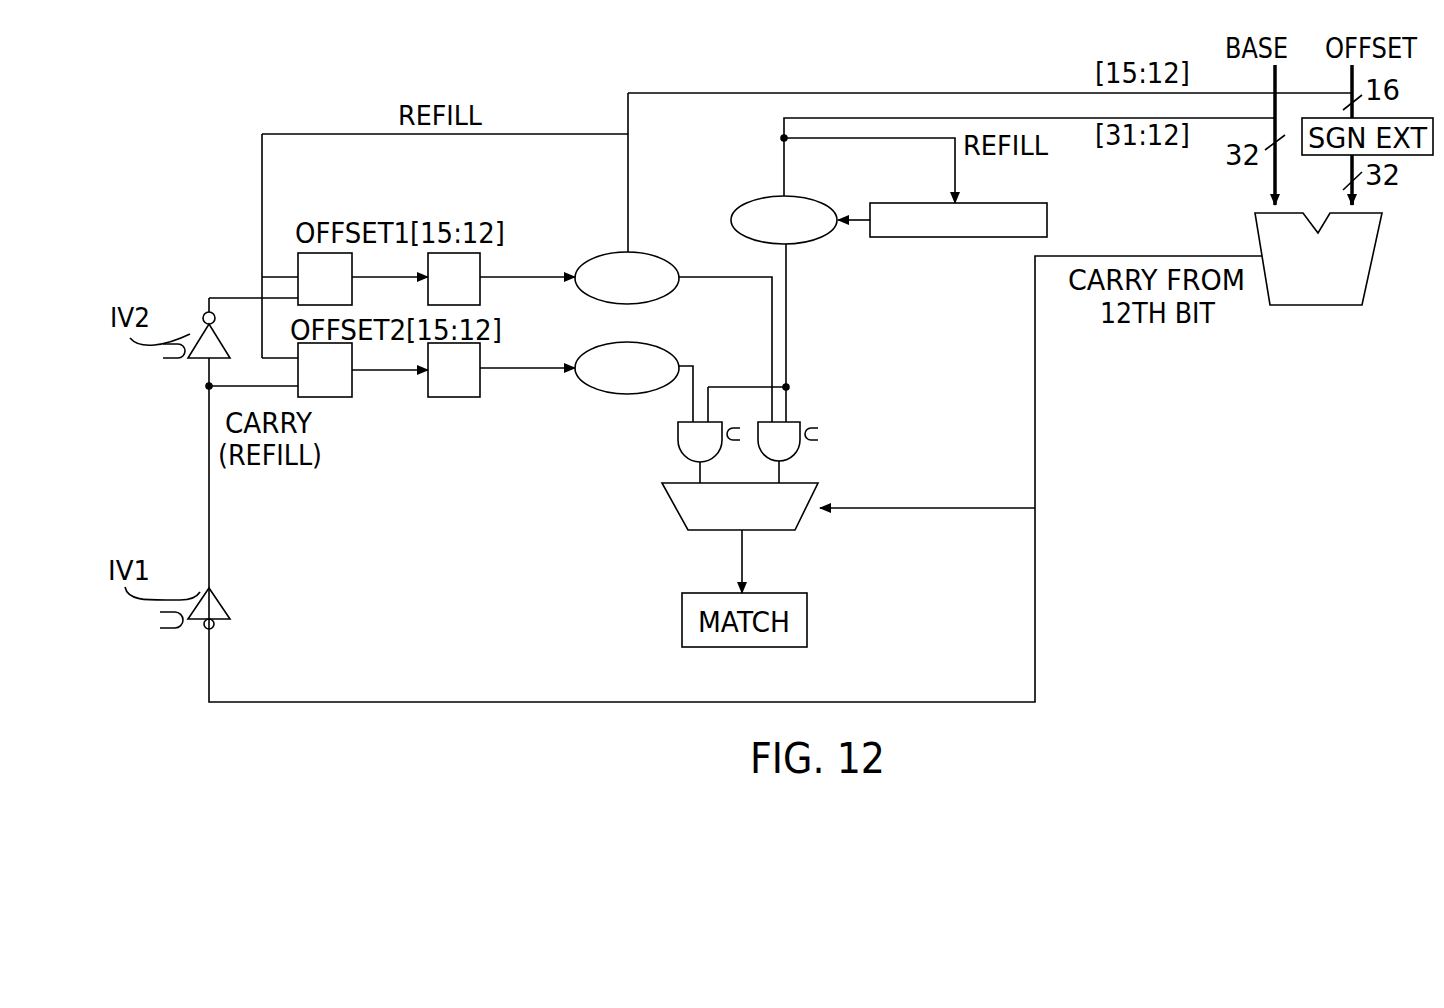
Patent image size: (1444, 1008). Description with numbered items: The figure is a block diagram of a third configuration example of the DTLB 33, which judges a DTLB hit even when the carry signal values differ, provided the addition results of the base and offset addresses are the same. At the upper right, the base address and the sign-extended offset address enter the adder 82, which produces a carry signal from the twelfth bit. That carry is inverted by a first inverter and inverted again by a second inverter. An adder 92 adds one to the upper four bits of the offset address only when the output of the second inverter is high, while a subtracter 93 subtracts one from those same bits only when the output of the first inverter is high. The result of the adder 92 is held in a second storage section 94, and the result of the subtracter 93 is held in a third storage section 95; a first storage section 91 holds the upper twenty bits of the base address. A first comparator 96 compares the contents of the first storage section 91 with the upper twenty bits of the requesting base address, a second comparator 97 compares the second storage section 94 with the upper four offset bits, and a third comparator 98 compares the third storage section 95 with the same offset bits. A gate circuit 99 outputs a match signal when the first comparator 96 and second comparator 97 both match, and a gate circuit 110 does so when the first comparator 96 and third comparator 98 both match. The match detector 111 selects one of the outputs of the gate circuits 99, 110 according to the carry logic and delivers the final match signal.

The DTLB 33 is at (1234, 530).
The adder 82 is at (1365, 288).
The first storage section 91 is at (947, 237).
The adder 92 is at (298, 262).
The subtracter 93 is at (333, 397).
The second storage section 94 is at (482, 258).
The third storage section 95 is at (458, 397).
The first comparator 96 is at (812, 242).
The second comparator 97 is at (652, 253).
The third comparator 98 is at (592, 388).
The gate circuit 99 is at (800, 446).
The gate circuit 110 is at (678, 437).
The match detector 111 is at (675, 515).